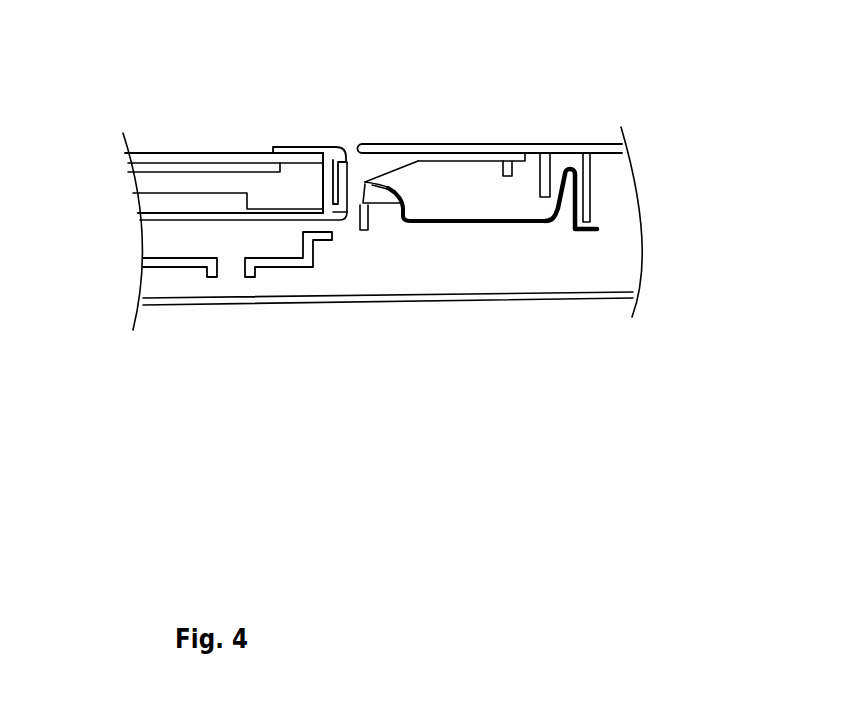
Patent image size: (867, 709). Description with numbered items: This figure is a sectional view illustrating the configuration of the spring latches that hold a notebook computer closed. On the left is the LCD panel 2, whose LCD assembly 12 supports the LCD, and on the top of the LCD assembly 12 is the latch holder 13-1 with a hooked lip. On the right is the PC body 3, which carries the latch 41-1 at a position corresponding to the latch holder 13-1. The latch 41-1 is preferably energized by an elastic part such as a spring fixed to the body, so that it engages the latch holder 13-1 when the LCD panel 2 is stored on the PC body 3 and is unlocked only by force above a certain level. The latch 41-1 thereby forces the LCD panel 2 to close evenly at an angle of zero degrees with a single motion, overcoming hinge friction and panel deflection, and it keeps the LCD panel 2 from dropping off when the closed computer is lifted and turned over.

The LCD panel 2 is at (220, 145).
The PC body 3 is at (517, 133).
The LCD assembly 12 is at (347, 213).
The latch holder 13-1 is at (352, 147).
The latch 41-1 is at (389, 203).